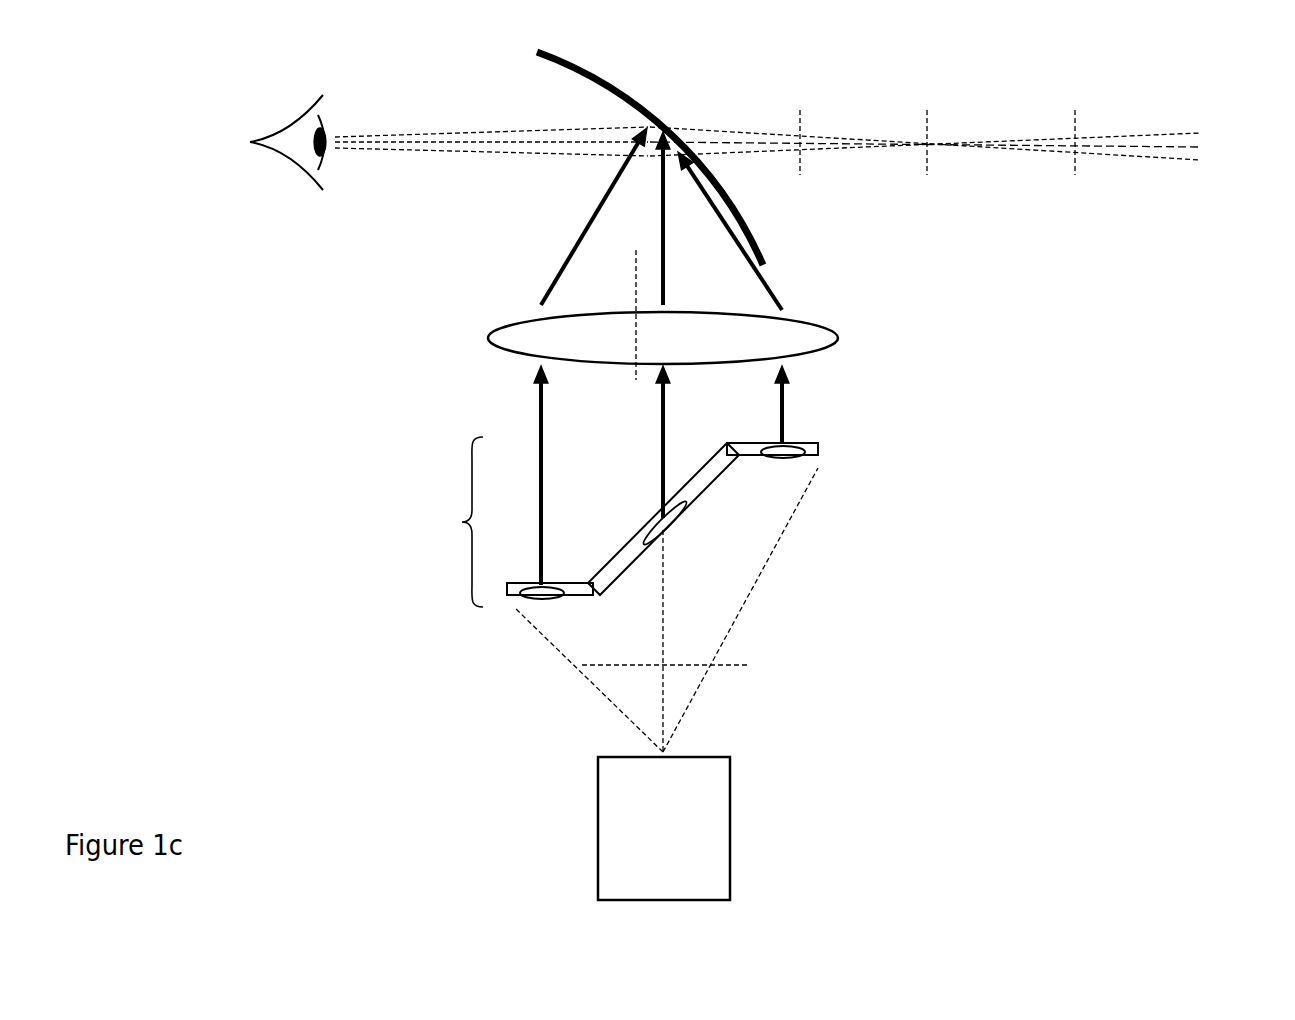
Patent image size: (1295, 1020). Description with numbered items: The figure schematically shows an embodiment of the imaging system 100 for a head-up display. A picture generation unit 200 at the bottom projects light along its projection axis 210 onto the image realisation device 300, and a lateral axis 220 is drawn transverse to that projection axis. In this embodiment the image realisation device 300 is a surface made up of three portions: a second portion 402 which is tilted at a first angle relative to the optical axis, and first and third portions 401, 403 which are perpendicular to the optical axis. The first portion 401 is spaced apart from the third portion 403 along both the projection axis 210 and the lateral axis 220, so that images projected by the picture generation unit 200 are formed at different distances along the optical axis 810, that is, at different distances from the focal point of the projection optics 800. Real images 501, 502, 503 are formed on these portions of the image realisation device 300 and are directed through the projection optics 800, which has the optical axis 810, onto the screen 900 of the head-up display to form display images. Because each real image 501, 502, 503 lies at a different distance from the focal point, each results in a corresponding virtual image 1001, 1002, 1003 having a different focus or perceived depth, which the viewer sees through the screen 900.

The imaging system 100 is at (1165, 396).
The picture generation unit 200 is at (733, 797).
The projection axis 210 is at (668, 727).
The lateral axis 220 is at (682, 665).
The image realisation device 300 is at (655, 545).
The first portion 401 is at (820, 444).
The second portion 402 is at (611, 558).
The third portion 403 is at (512, 600).
The real image 501 is at (803, 457).
The real image 502 is at (669, 528).
The real image 503 is at (549, 600).
The projection optics 800 is at (823, 322).
The optical axis 810 is at (634, 288).
The screen 900 is at (577, 46).
The virtual image 1001 is at (801, 103).
The virtual image 1002 is at (928, 103).
The virtual image 1003 is at (1076, 103).